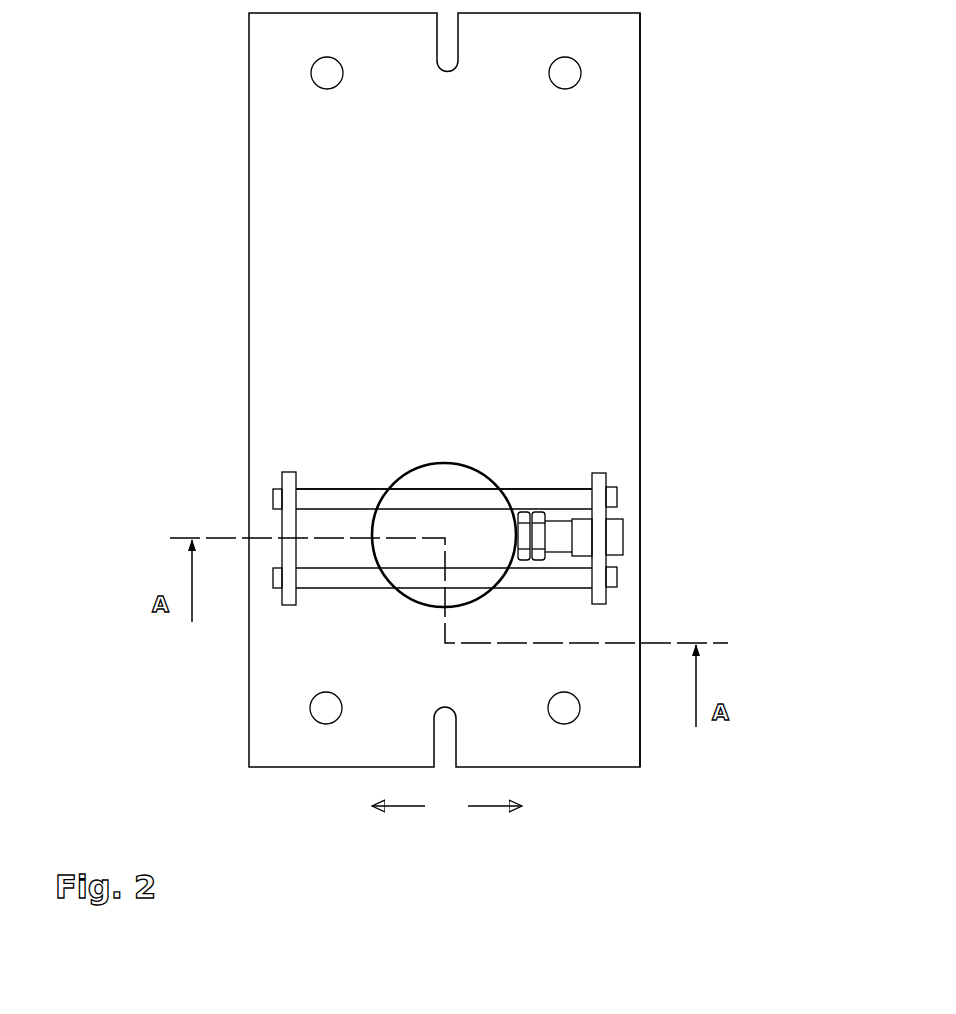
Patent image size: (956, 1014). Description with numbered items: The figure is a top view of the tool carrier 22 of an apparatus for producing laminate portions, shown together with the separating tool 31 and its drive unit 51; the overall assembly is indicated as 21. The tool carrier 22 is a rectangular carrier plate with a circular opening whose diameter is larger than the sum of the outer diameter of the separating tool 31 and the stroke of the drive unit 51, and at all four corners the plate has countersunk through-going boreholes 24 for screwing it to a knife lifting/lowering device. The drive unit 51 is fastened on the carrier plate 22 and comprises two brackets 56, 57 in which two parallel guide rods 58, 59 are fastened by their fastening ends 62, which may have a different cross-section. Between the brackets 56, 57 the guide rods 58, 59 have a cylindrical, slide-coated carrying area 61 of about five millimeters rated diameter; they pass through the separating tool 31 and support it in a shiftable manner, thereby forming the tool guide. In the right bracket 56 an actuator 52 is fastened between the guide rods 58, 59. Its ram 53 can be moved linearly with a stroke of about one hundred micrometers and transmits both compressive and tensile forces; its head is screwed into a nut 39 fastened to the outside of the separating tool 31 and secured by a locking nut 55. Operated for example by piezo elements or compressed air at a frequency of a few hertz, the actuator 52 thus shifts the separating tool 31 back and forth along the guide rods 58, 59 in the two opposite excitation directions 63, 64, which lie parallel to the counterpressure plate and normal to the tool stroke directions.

The mounting plate 21 is at (242, 98).
The tool carrier 22 is at (641, 128).
The through-going boreholes 24 is at (326, 724).
The separating tool 31 is at (462, 465).
The nut 39 is at (522, 546).
The drive unit 51 is at (627, 512).
The actuator 52 is at (613, 536).
The ram 53 is at (565, 548).
The locking nut 55 is at (538, 548).
The bracket 56 is at (598, 479).
The bracket 57 is at (289, 481).
The guide rod 58 is at (328, 490).
The guide rod 59 is at (360, 589).
The carrying area 61 is at (360, 497).
The fastening ends 62 is at (275, 498).
The excitation direction 63 is at (402, 811).
The excitation direction 64 is at (484, 806).